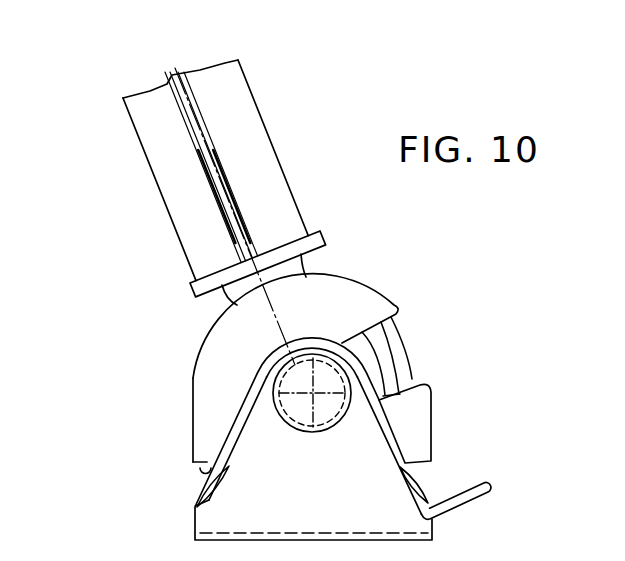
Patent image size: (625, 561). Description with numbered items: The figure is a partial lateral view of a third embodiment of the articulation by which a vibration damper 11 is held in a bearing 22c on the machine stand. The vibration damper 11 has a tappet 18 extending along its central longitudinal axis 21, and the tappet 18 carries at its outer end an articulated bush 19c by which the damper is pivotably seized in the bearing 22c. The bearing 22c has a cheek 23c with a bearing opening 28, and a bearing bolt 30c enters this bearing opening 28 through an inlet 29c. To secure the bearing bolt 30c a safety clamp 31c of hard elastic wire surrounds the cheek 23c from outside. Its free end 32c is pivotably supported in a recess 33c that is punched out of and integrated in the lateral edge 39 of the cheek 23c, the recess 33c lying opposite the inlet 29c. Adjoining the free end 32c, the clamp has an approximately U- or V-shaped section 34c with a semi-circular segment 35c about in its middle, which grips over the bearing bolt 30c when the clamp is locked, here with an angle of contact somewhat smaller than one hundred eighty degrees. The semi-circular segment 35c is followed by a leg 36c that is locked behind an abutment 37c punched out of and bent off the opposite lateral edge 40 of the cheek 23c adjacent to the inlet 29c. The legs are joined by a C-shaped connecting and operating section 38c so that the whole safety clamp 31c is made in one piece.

The vibration damper 11 is at (283, 132).
The tappet 18 is at (165, 133).
The central longitudinal axis 21 is at (217, 177).
The articulated bush 19c is at (318, 258).
The bearing 22c is at (193, 336).
The cheek 23c is at (227, 368).
The bearing opening 28 is at (295, 365).
The inlet 29c is at (392, 380).
The bearing bolt 30c is at (300, 407).
The safety clamp 31c is at (236, 408).
The free end 32c is at (203, 470).
The recess 33c is at (208, 488).
The U- or V-shaped section 34c is at (262, 387).
The semi-circular segment 35c is at (308, 337).
The leg 36c is at (380, 425).
The abutment 37c is at (413, 473).
The connecting and operating section 38c is at (483, 493).
The lateral edge 39 is at (193, 423).
The lateral edge 40 is at (432, 432).